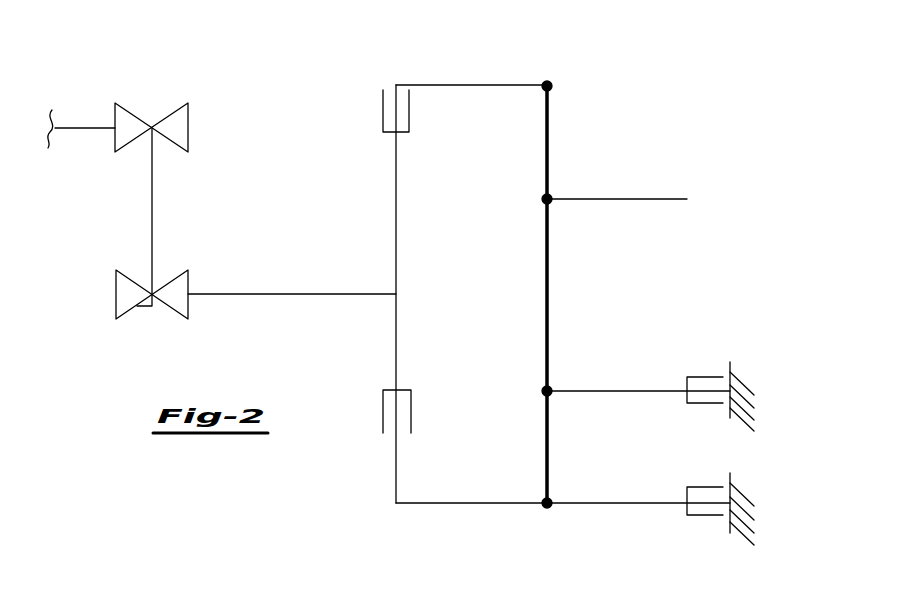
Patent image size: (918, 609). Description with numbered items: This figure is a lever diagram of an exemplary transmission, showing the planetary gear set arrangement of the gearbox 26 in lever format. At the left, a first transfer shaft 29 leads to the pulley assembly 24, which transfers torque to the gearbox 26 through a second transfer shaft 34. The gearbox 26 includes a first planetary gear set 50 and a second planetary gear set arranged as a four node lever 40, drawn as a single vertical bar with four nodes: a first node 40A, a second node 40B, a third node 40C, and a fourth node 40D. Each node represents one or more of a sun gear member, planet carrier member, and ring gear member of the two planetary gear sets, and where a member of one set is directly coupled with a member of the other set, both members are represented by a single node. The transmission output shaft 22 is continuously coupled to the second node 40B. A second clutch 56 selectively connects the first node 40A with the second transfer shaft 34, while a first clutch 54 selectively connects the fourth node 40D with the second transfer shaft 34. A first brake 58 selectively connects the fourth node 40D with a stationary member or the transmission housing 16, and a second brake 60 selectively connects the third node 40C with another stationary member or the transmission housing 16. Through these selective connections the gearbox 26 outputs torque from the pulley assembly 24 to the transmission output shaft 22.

The transmission housing 16 is at (746, 387).
The transmission output shaft 22 is at (657, 199).
The pulley assembly 24 is at (146, 85).
The gearbox 26 is at (648, 52).
The first transfer shaft 29 is at (83, 128).
The second transfer shaft 34 is at (291, 295).
The four node lever 40 is at (547, 60).
The first node 40A is at (553, 88).
The second node 40B is at (542, 199).
The third node 40C is at (542, 389).
The fourth node 40D is at (554, 500).
The first planetary gear set 50 is at (553, 519).
The first clutch 54 is at (411, 421).
The second clutch 56 is at (383, 108).
The first brake 58 is at (706, 487).
The second brake 60 is at (706, 377).